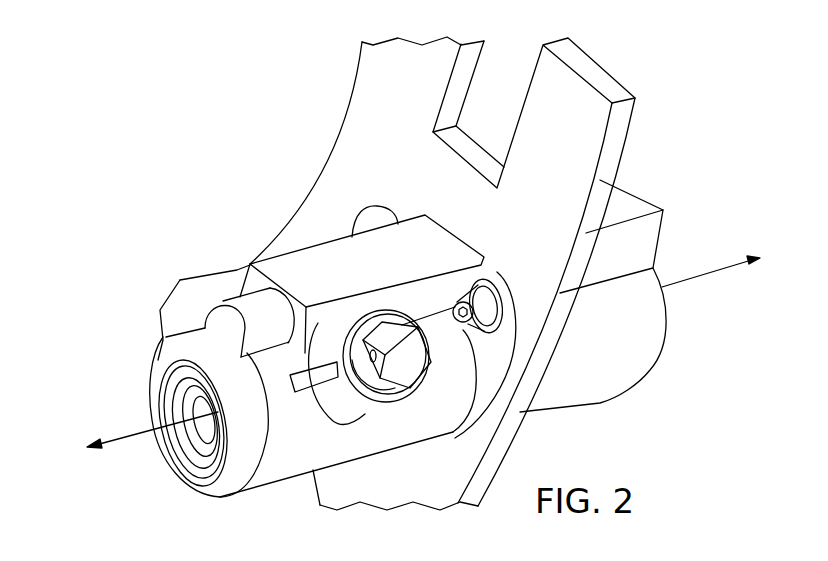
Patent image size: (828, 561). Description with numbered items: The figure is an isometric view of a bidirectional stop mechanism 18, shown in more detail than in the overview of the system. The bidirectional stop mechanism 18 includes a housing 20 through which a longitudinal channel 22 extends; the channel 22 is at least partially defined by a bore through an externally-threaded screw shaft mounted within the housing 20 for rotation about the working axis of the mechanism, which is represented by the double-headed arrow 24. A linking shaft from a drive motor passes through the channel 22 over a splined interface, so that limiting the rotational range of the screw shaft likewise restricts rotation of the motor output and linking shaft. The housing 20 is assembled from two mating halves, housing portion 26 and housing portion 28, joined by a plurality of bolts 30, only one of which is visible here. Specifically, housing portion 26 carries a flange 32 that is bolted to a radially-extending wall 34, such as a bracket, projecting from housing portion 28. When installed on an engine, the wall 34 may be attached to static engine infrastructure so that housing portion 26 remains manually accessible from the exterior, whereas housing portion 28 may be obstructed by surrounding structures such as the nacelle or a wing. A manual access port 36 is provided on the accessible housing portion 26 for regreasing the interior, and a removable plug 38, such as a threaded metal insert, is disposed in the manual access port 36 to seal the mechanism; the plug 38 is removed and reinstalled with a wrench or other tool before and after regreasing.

The bidirectional stop mechanism 18 is at (160, 178).
The housing 20 is at (266, 492).
The longitudinal channel 22 is at (208, 403).
The double-headed arrow 24 is at (722, 268).
The housing portion 26 is at (288, 484).
The housing portion 28 is at (573, 392).
The bolt 30 is at (463, 300).
The flange 32 is at (500, 288).
The radially-extending wall 34 is at (438, 493).
The manual access port 36 is at (340, 322).
The removable plug 38 is at (402, 327).